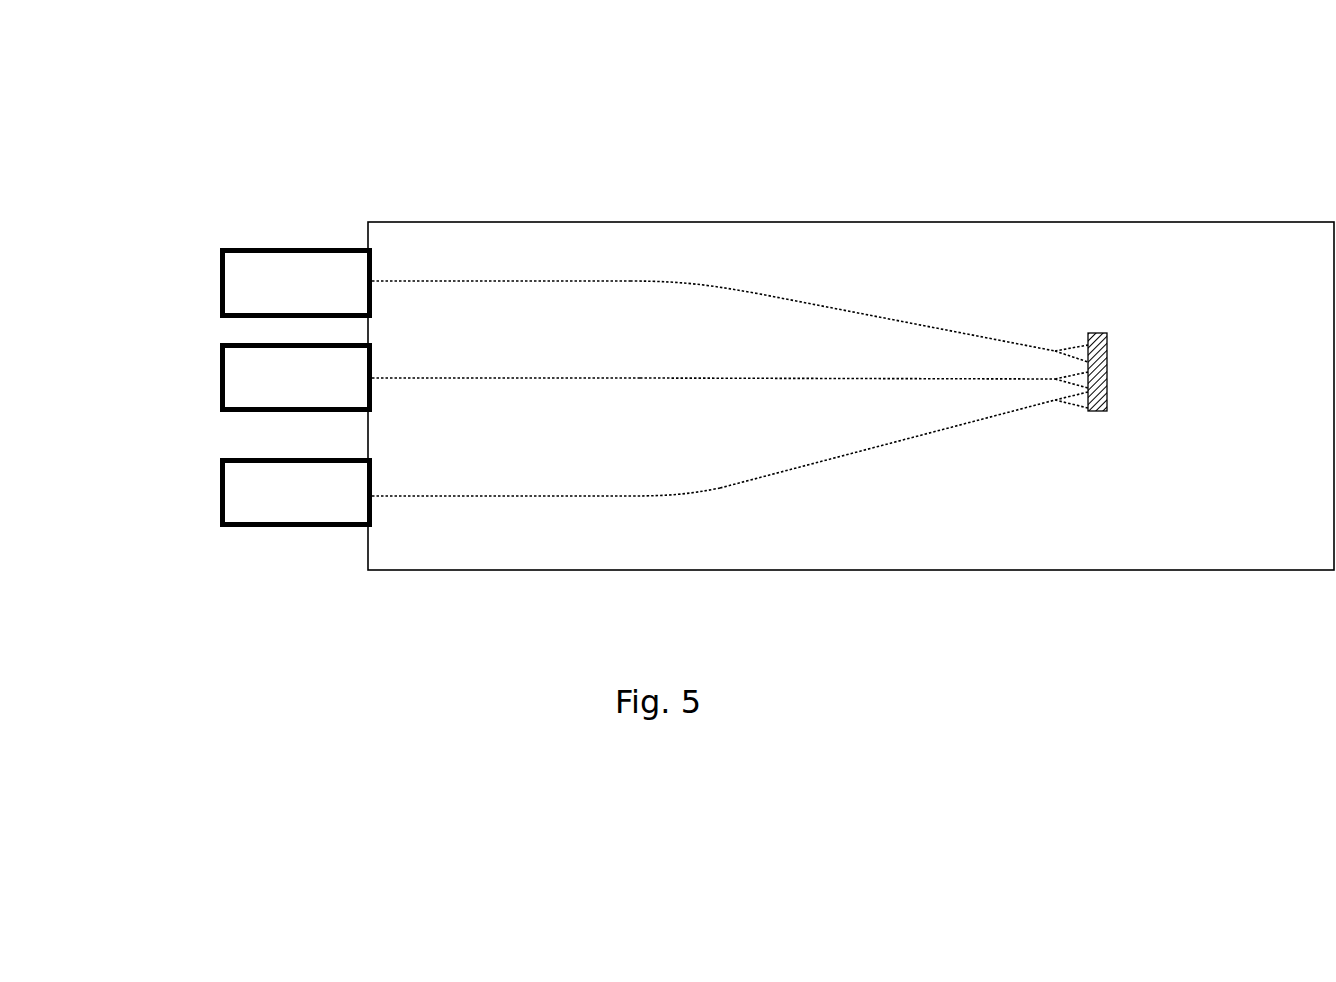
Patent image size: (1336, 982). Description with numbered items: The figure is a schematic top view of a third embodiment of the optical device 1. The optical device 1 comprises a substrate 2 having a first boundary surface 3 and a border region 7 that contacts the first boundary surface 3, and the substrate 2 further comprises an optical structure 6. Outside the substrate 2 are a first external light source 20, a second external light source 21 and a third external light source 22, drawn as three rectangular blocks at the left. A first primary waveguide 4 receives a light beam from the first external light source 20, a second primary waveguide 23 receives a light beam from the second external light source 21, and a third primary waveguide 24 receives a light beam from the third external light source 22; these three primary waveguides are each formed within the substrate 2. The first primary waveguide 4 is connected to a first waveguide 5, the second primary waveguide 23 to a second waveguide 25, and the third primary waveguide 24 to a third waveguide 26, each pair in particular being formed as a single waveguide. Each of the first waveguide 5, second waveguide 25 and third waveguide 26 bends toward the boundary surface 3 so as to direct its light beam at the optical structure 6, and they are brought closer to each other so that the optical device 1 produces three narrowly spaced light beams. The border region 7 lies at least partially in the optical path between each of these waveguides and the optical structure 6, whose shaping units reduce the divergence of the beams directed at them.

The optical device 1 is at (909, 160).
The substrate 2 is at (609, 240).
The first boundary surface 3 is at (1030, 270).
The first primary waveguide 4 is at (443, 281).
The first waveguide 5 is at (737, 290).
The optical structure 6 is at (1106, 333).
The border region 7 is at (1073, 333).
The first external light source 20 is at (303, 292).
The second external light source 21 is at (267, 385).
The third external light source 22 is at (303, 497).
The second primary waveguide 23 is at (433, 378).
The third primary waveguide 24 is at (553, 496).
The second waveguide 25 is at (704, 378).
The third waveguide 26 is at (853, 453).